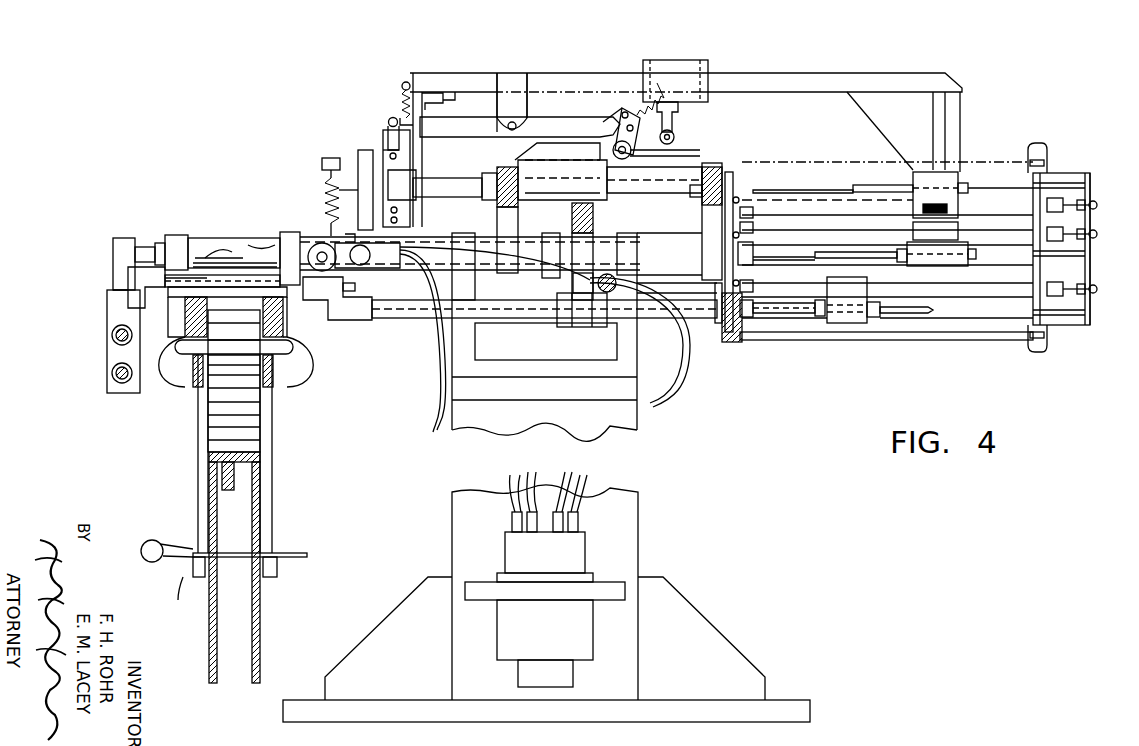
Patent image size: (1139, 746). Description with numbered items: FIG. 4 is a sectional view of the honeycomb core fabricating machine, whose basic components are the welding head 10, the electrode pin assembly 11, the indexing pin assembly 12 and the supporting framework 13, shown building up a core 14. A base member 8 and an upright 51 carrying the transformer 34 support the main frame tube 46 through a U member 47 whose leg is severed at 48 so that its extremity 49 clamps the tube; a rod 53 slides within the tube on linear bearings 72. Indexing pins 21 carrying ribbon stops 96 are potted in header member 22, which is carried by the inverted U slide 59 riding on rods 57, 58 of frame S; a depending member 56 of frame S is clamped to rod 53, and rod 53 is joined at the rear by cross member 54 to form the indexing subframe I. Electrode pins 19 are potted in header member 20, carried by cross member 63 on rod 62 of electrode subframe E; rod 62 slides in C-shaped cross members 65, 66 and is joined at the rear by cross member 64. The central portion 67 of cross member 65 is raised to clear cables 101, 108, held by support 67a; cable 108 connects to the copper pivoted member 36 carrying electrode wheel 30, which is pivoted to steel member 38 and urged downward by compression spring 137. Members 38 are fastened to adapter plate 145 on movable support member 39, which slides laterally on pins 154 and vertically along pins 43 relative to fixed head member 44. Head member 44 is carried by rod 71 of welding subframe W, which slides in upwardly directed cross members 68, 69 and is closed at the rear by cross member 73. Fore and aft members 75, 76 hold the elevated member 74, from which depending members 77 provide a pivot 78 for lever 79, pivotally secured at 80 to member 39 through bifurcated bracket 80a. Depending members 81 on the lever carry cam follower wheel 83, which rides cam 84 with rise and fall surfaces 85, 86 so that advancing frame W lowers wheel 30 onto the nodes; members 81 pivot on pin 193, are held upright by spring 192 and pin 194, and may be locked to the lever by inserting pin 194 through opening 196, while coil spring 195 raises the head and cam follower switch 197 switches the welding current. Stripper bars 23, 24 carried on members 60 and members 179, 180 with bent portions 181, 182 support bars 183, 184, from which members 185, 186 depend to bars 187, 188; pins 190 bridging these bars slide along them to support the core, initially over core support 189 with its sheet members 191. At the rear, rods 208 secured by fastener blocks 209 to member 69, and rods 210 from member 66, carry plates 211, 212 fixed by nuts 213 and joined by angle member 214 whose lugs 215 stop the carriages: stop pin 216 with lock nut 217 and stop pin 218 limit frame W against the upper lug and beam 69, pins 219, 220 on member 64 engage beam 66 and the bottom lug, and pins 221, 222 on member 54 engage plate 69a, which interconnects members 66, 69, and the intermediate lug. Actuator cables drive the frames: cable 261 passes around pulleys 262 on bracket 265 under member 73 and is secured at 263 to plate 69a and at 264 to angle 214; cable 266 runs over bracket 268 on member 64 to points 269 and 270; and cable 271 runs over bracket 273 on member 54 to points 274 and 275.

The base plate 8 is at (810, 712).
The apparatus 10 is at (428, 216).
The frame 11 is at (352, 326).
The support block 12 is at (118, 274).
The frame housing 13 is at (478, 335).
The column 14 is at (262, 452).
The support block 19 is at (283, 312).
The bracket 20 is at (333, 302).
The rod 21 is at (245, 288).
The block 22 is at (140, 292).
The hatched support 23 is at (287, 335).
The column wall 24 is at (195, 378).
The swivel 30 is at (320, 243).
The connector 34 is at (588, 541).
The tube fitting 36 is at (385, 265).
The spring 38 is at (336, 212).
The plate 39 is at (368, 163).
The link 43 is at (390, 130).
The plate 44 is at (410, 160).
The cylinder 46 is at (255, 240).
The window 47 is at (550, 362).
The upright 48 is at (640, 257).
The upright 49 is at (463, 234).
The pedestal 51 is at (638, 540).
The rod 53 is at (775, 262).
The block 54 is at (940, 262).
The block 56 is at (128, 290).
The screw 57 is at (118, 340).
The screw 58 is at (116, 380).
The plate 59 is at (107, 340).
The cylinder 60 is at (240, 250).
The rod 62 is at (404, 320).
The bracket 63 is at (362, 318).
The block 64 is at (856, 325).
The fitting 65 is at (578, 328).
The plate 66 is at (730, 338).
The block 67 is at (572, 218).
The bearing 67a is at (565, 285).
The block 68 is at (520, 232).
The rail 69 is at (705, 250).
The rail 69a is at (715, 278).
The shaft 71 is at (470, 192).
The screw 72 is at (118, 378).
The block 73 is at (935, 185).
The beam 74 is at (826, 85).
The column 75 is at (420, 95).
The post 76 is at (950, 135).
The link 77 is at (513, 98).
The link 78 is at (500, 110).
The bracket 79 is at (450, 118).
The arm 80 is at (400, 102).
The pivot 80a is at (389, 120).
The spring 81 is at (638, 84).
The bar 83 is at (655, 154).
The bar 84 is at (570, 145).
The rod 85 is at (605, 195).
The housing 86 is at (520, 156).
The flange 96 is at (180, 234).
The hose 101 is at (437, 378).
The hose 108 is at (675, 358).
The spring 137 is at (338, 192).
The knob 145 is at (328, 170).
The pin 154 is at (390, 154).
The bellows 179 is at (300, 368).
The bellows 180 is at (162, 378).
The column wall 181 is at (275, 372).
The pivot 182 is at (638, 149).
The strip 183 is at (270, 388).
The wall 184 is at (200, 426).
The wall 185 is at (275, 505).
The tube 186 is at (205, 483).
The bracket 187 is at (278, 572).
The lead 188 is at (175, 594).
The tubes 189 is at (206, 630).
The hook 190 is at (140, 562).
The tube 191 is at (253, 600).
The block 192 is at (675, 69).
The link 193 is at (620, 120).
The arm 194 is at (625, 112).
The spring 195 is at (403, 86).
The line 196 is at (618, 112).
The stem 197 is at (680, 110).
The brace 208 is at (880, 120).
The plate 209 is at (712, 160).
The rail 210 is at (950, 340).
The end plate 211 is at (1065, 172).
The plate 212 is at (1065, 328).
The bracket 213 is at (1042, 150).
The plate 214 is at (1092, 268).
The rail 215 is at (1092, 313).
The rod 216 is at (1010, 185).
The rod 217 is at (970, 185).
The rod 218 is at (865, 185).
The rod 219 is at (798, 300).
The rod 220 is at (900, 313).
The rod 221 is at (870, 258).
The rod 222 is at (990, 265).
The rail 261 is at (785, 180).
The block 262 is at (950, 232).
The contact 263 is at (745, 172).
The contact 264 is at (1097, 205).
The rail 265 is at (907, 218).
The rail 266 is at (812, 300).
The block 268 is at (868, 322).
The plate 269 is at (745, 335).
The contact 270 is at (1097, 290).
The rail 271 is at (818, 230).
The rod 273 is at (925, 240).
The plate 274 is at (727, 198).
The contact 275 is at (1097, 234).
The station S is at (102, 246).
The indexing I is at (152, 236).
The direction W is at (470, 178).
The direction E is at (683, 325).